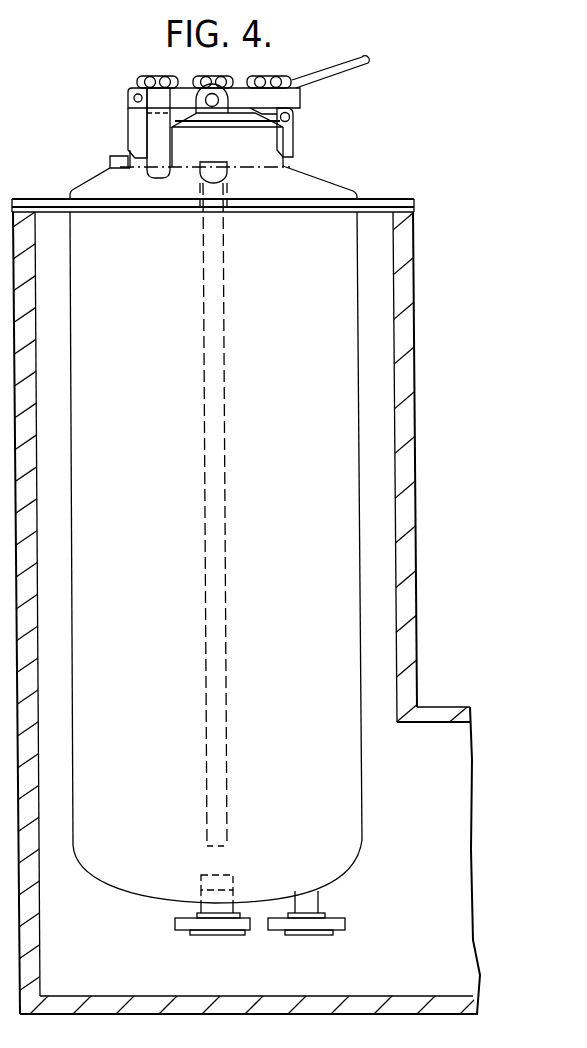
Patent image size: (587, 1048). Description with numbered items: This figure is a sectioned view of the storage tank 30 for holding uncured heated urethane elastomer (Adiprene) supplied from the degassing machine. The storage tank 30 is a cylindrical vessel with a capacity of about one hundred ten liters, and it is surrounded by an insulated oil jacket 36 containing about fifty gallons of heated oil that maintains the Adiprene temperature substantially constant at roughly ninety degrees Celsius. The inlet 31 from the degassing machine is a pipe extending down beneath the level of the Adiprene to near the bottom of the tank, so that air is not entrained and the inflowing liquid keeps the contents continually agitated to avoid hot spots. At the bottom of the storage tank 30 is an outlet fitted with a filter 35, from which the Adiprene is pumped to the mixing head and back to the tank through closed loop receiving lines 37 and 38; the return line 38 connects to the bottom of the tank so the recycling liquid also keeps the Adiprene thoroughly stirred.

The storage tank 30 is at (357, 230).
The inlet 31 is at (216, 166).
The filter 35 is at (239, 876).
The insulated oil jacket 36 is at (378, 375).
The closed loop receiving line 37 is at (206, 934).
The return line 38 is at (309, 937).